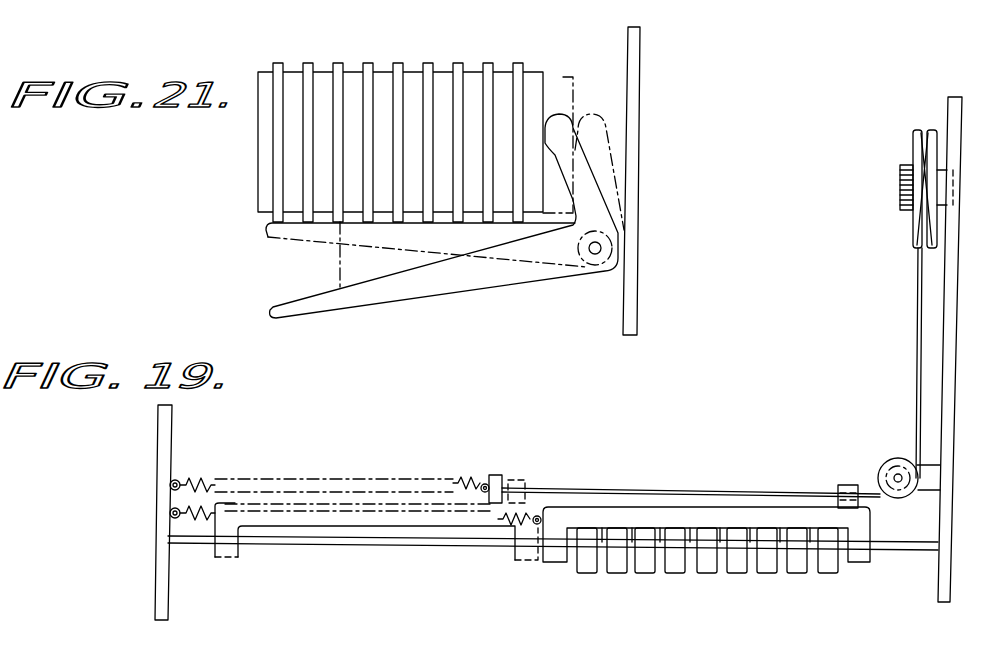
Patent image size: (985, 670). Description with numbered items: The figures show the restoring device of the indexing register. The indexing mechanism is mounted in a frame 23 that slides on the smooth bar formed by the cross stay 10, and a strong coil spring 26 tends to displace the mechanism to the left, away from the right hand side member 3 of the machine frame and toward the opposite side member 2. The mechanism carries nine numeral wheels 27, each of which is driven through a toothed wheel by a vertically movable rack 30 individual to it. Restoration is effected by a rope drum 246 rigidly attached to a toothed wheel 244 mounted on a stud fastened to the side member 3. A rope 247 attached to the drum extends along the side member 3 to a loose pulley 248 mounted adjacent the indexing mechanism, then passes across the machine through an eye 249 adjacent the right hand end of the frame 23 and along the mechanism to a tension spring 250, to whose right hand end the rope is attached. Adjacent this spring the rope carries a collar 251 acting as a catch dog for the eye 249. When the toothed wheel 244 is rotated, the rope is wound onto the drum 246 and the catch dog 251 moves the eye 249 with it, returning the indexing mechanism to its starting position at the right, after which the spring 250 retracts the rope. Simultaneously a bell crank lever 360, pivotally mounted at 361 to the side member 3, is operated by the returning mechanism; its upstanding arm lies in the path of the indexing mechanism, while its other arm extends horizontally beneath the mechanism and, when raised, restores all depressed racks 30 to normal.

In FIG. 19, the post 2 is at (162, 563).
In FIG. 21, the right hand side member 3 is at (633, 317).
In FIG. 19, the right hand side member 3 is at (945, 398).
In FIG. 19, the cross stay 10 is at (355, 542).
In FIG. 19, the frame 23 is at (723, 513).
In FIG. 19, the coil spring 26 is at (207, 523).
In FIG. 19, the numeral wheels 27 is at (615, 572).
In FIG. 21, the rack 30 is at (307, 70).
In FIG. 19, the toothed wheel 244 is at (905, 195).
In FIG. 19, the rope drum 246 is at (913, 143).
In FIG. 19, the rope 247 is at (917, 333).
In FIG. 19, the loose pulley 248 is at (897, 458).
In FIG. 19, the eye 249 is at (850, 484).
In FIG. 19, the tension spring 250 is at (357, 487).
In FIG. 19, the collar 251 is at (497, 477).
In FIG. 21, the bell crank lever 360 is at (490, 282).
In FIG. 21, the pivot 361 is at (593, 257).